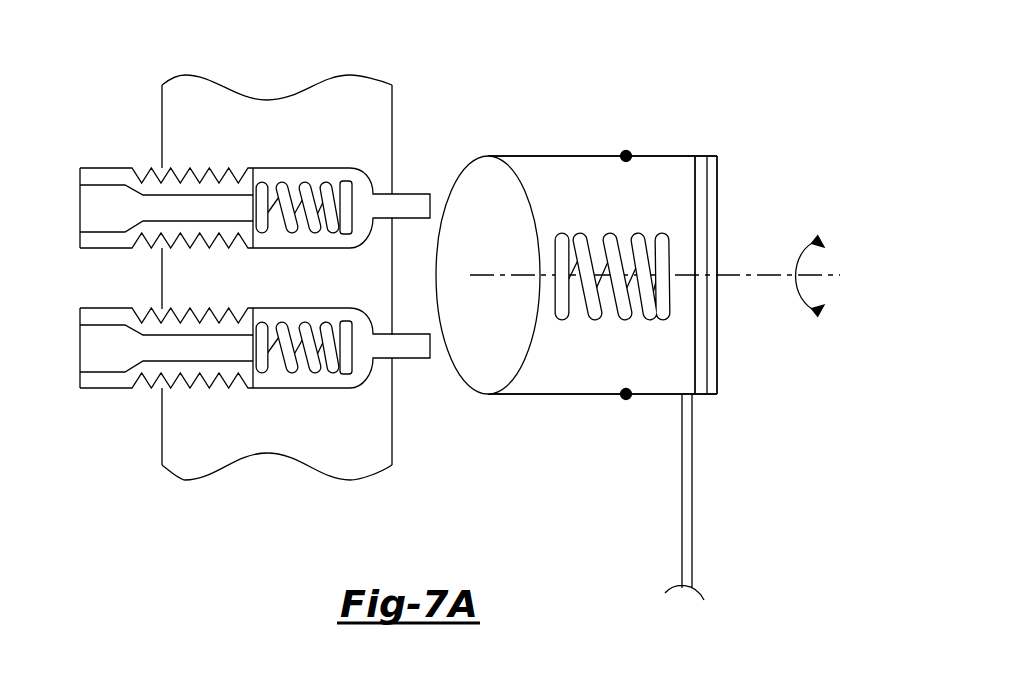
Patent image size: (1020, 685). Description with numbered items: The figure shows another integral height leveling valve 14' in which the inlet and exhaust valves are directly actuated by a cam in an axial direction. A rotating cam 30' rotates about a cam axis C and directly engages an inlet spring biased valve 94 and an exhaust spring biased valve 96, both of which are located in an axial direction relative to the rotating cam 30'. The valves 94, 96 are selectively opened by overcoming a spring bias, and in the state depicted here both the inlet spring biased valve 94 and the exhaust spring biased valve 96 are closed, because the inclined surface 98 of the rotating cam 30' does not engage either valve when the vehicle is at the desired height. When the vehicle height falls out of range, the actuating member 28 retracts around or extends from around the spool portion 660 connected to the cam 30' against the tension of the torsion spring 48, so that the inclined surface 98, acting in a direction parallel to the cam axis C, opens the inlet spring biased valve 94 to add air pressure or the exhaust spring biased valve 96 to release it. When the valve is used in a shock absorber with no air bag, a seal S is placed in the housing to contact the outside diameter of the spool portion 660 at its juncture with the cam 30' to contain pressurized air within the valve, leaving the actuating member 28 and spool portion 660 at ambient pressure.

The integral height leveling valve 14' is at (662, 206).
The actuating member 28 is at (692, 502).
The rotating cam 30' is at (602, 320).
The torsion spring 48 is at (593, 312).
The inlet spring biased valve 94 is at (412, 210).
The exhaust spring biased valve 96 is at (412, 350).
The inclined surface 98 is at (484, 188).
The spool portion 660 is at (680, 155).
The seal S is at (628, 399).
The cam axis C is at (830, 270).